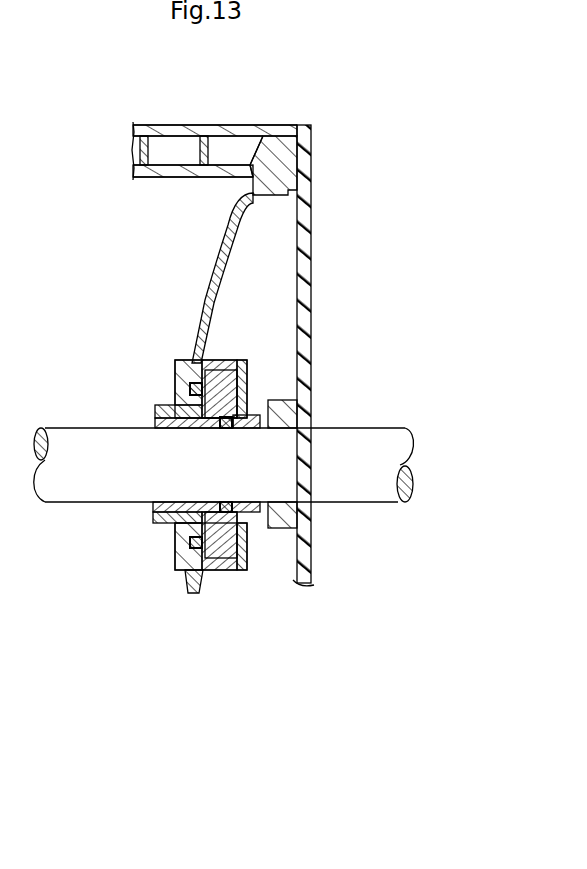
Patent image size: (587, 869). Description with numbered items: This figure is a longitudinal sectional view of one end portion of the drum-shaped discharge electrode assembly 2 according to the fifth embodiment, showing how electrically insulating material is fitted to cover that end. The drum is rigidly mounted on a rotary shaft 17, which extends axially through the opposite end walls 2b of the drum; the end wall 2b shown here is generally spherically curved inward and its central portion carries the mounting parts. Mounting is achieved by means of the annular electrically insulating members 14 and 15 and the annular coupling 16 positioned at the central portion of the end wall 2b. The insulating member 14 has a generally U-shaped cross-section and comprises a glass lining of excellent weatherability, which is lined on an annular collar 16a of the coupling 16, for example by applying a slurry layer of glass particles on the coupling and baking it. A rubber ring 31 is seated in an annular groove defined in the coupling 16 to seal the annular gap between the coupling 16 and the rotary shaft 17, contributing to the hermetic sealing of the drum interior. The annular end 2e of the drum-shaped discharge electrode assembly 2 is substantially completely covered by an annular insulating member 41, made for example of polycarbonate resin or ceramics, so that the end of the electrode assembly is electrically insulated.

The drum-shaped discharge electrode assembly 2 is at (220, 123).
The annular ends 2e is at (312, 150).
The end wall 2b is at (210, 274).
The annular insulating member 41 is at (312, 255).
The annular electrically insulating member 14 is at (233, 358).
The annular collar 16a is at (251, 372).
The annular coupling 16 is at (252, 415).
The annular electrically insulating member 15 is at (163, 405).
The rubber ring 31 is at (226, 430).
The rotary shaft 17 is at (355, 436).